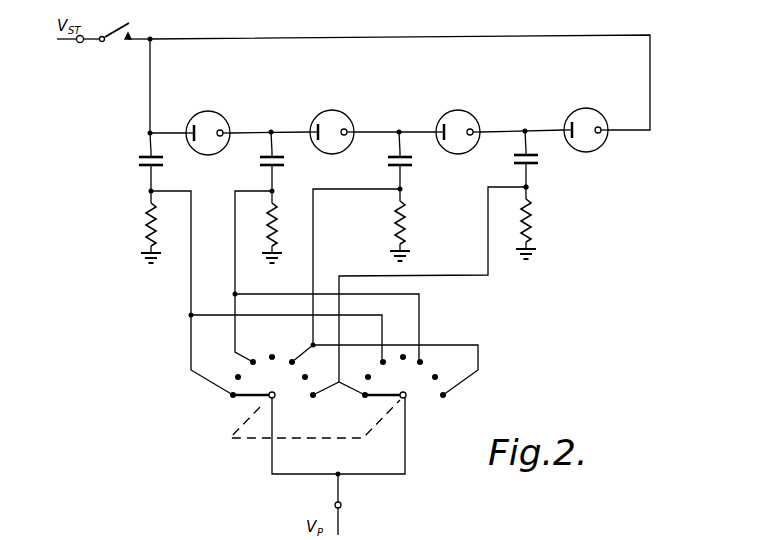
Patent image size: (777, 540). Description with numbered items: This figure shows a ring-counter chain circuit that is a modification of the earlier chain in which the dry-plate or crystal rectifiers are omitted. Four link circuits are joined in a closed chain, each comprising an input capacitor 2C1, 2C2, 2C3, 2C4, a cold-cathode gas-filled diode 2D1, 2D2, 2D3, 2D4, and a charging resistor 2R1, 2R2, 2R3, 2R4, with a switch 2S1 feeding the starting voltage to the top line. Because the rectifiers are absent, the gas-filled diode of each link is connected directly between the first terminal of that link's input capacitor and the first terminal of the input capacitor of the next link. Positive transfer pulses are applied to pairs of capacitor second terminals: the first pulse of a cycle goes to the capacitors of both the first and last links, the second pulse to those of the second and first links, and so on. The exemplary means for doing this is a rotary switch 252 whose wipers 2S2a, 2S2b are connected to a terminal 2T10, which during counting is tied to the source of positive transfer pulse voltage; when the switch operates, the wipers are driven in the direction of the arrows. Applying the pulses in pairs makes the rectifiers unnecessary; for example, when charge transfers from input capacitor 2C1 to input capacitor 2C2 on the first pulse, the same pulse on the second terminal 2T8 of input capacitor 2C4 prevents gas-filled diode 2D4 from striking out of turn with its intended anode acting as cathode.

The switch 2S1 is at (103, 24).
The cold-cathode gas-filled diode 2D1 is at (208, 123).
The cold-cathode gas-filled diode 2D2 is at (332, 123).
The cold-cathode gas-filled diode 2D3 is at (458, 123).
The cold-cathode gas-filled diode 2D4 is at (585, 120).
The input capacitor 2C1 is at (165, 162).
The input capacitor 2C2 is at (288, 161).
The input capacitor 2C3 is at (414, 160).
The input capacitor 2C4 is at (538, 159).
The charging resistor 2R1 is at (163, 226).
The charging resistor 2R2 is at (284, 226).
The charging resistor 2R3 is at (415, 224).
The charging resistor 2R4 is at (540, 222).
The second terminal of input capacitor 2C4 2T8 is at (526, 187).
The wiper of rotary switch 2S2a is at (255, 372).
The wiper of rotary switch 2S2b is at (387, 372).
The rotary switch 252 is at (315, 419).
The terminal 2T10 is at (341, 506).